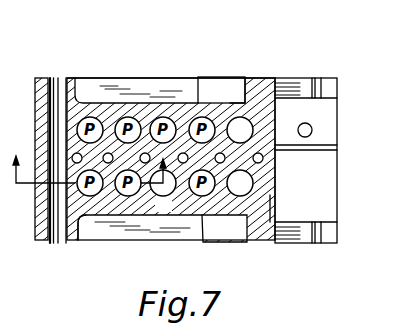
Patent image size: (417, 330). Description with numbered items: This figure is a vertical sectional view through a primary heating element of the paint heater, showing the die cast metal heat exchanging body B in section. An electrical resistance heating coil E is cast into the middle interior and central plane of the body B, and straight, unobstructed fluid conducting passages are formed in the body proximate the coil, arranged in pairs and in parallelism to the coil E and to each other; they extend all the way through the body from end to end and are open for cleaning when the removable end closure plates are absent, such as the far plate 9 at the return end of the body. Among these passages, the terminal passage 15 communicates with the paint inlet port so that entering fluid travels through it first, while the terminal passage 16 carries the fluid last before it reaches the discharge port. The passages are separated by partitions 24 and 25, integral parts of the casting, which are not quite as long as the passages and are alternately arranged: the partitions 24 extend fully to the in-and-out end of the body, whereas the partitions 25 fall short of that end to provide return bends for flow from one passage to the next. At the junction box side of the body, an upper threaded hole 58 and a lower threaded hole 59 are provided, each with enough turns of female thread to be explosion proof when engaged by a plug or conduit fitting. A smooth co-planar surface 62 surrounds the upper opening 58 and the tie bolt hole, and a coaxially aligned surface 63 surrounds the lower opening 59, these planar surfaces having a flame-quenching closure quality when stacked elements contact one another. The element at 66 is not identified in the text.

The far plate 9 is at (87, 184).
The terminal passage P15 15 is at (240, 130).
The terminal passage P16 16 is at (240, 183).
The partition 24 is at (220, 120).
The partition 25 is at (185, 107).
The upper threaded hole 58 is at (297, 88).
The lower threaded hole 59 is at (302, 243).
The smooth co-planar surface 62 is at (73, 78).
The coaxially aligned surface 63 is at (78, 243).
The central tube 66 is at (58, 243).
The body B is at (143, 78).
The electrical resistance heating coil E is at (136, 91).